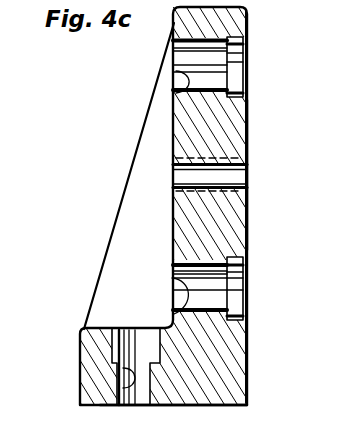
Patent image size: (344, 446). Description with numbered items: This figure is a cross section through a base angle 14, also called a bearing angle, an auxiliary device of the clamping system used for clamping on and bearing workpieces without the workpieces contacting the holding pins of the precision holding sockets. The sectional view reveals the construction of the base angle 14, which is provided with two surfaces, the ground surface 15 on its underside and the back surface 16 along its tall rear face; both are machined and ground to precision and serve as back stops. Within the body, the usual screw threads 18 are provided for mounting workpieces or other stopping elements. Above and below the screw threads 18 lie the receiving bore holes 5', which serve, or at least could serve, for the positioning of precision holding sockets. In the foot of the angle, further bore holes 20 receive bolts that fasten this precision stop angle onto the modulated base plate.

The base angle 14 is at (261, 98).
The ground surface 15 is at (215, 405).
The back surface 16 is at (249, 139).
The screw threads 18 is at (183, 178).
The receiving bore holes 5' is at (127, 189).
The bore holes 20 is at (123, 388).